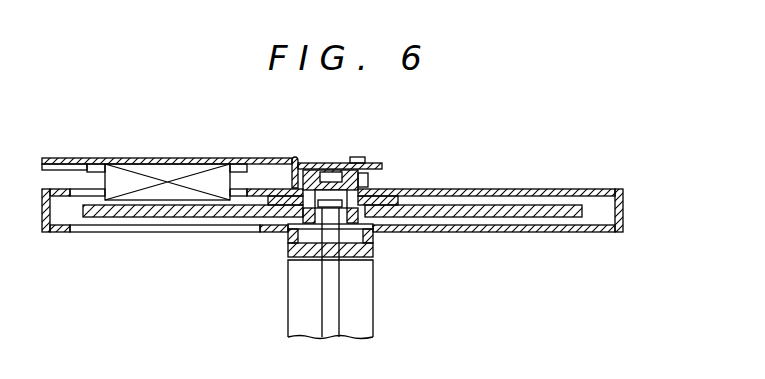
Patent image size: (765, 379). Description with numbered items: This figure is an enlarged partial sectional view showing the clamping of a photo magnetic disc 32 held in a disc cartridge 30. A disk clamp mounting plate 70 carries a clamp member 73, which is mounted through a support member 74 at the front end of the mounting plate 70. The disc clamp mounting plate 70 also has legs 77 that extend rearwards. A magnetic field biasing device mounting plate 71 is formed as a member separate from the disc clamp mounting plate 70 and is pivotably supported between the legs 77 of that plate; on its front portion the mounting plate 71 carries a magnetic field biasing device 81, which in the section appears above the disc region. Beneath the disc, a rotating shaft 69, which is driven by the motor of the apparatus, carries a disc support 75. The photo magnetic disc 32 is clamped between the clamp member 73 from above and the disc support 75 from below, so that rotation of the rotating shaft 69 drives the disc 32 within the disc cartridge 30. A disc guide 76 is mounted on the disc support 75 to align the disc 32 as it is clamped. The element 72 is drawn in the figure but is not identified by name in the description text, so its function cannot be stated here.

The disc cartridge 30 is at (585, 190).
The photo magnetic disc 32 is at (498, 205).
The rotating shaft 69 is at (337, 308).
The disk clamp mounting plate 70 is at (322, 163).
The magnetic field biasing device mounting plate 71 is at (143, 158).
The tab 72 is at (372, 157).
The clamp member 73 is at (382, 196).
The support member 74 is at (292, 178).
The disc support 75 is at (373, 235).
The disc guide 76 is at (290, 245).
The legs 77 is at (62, 163).
The magnetic field biasing device 81 is at (168, 174).